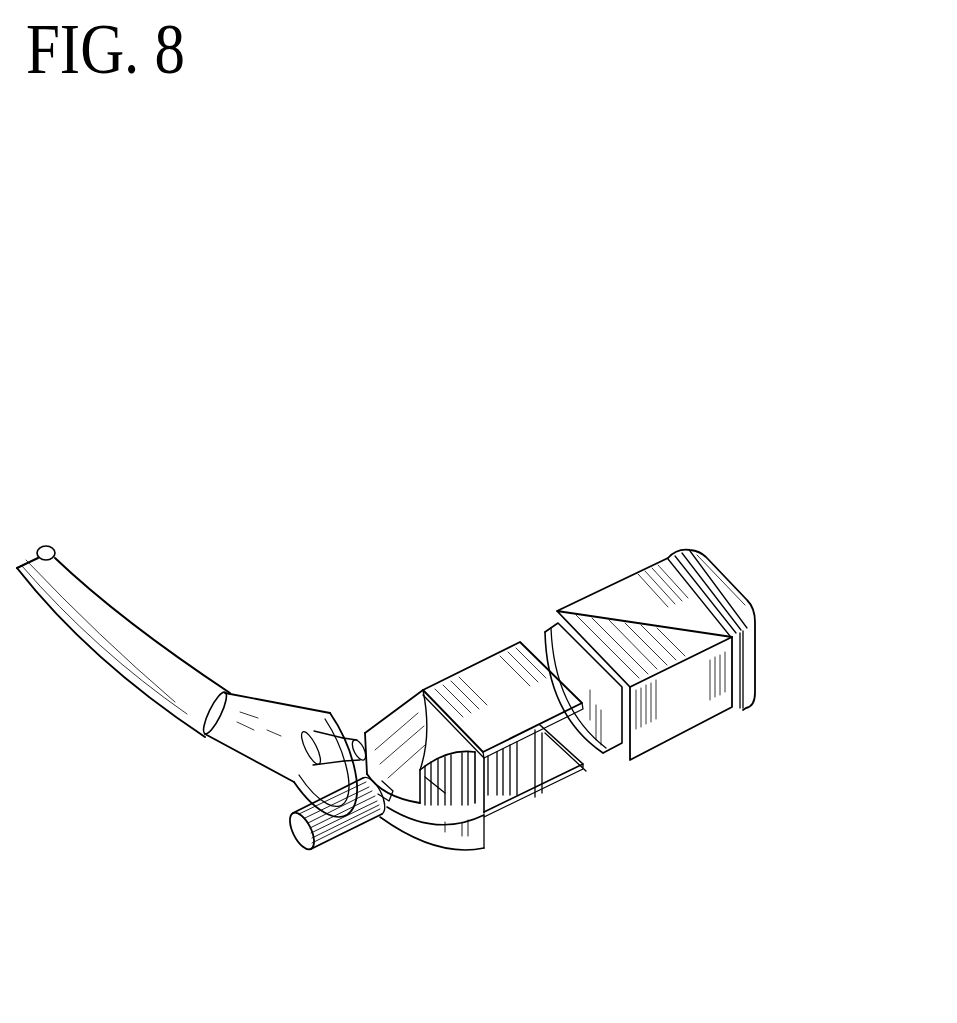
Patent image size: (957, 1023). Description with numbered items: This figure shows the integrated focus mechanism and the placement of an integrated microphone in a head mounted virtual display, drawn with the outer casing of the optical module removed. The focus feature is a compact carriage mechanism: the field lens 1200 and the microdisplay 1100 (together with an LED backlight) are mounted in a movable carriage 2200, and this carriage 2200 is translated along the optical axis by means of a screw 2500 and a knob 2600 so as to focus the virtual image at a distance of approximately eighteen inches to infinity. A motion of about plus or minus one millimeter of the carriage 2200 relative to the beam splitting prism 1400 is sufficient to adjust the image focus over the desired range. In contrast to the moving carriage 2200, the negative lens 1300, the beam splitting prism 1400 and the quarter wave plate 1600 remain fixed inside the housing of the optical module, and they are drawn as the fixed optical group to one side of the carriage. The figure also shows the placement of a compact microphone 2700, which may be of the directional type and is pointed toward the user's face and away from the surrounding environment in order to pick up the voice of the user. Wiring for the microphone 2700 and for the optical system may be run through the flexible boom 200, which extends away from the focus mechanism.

The flexible boom 200 is at (110, 673).
The compact microphone 2700 is at (363, 737).
The knob 2600 is at (312, 848).
The screw 2500 is at (427, 785).
The microdisplay 1100 is at (514, 760).
The field lens 1200 is at (540, 757).
The negative lens 1300 is at (612, 755).
The beam splitting prism 1400 is at (632, 592).
The quarter wave plate 1600 is at (737, 710).
The movable carriage 2200 is at (485, 675).